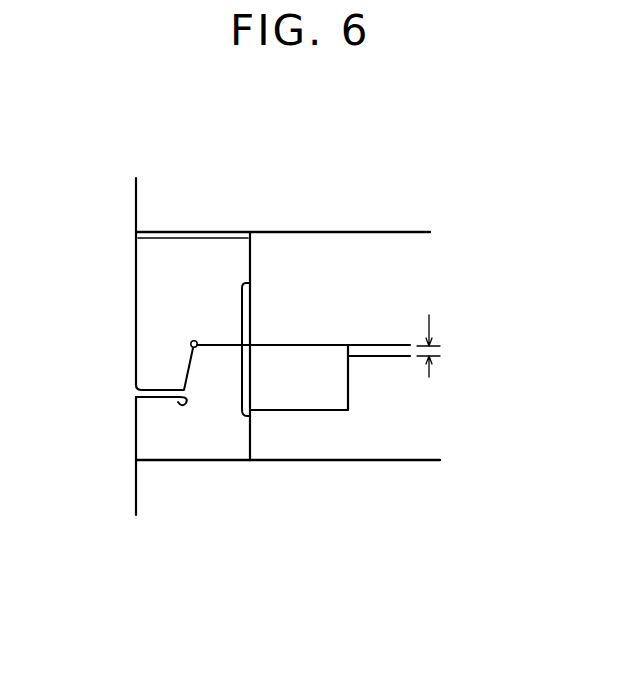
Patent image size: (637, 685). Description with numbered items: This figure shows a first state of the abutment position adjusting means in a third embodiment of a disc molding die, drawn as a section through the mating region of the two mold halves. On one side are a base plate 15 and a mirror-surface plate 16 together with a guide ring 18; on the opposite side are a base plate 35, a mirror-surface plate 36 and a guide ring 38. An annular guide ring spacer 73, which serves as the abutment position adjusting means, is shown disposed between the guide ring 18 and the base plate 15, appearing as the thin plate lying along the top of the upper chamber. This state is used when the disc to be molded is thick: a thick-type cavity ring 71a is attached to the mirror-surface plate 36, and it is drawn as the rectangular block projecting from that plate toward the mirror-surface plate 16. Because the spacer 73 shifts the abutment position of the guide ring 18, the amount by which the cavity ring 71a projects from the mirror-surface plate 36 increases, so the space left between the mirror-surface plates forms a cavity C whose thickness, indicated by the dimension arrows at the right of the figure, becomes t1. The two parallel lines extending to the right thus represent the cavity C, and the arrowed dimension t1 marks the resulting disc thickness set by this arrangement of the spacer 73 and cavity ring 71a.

The base plate 15 is at (147, 210).
The base plate 35 is at (147, 488).
The guide ring 18 is at (172, 247).
The annular guide ring spacer 73 is at (217, 243).
The mirror-surface plate 16 is at (365, 248).
The thick-type cavity ring 71a is at (300, 403).
The guide ring 38 is at (183, 452).
The mirror-surface plate 36 is at (378, 445).
The cavity C is at (384, 349).
The cavity thickness t1 is at (428, 362).